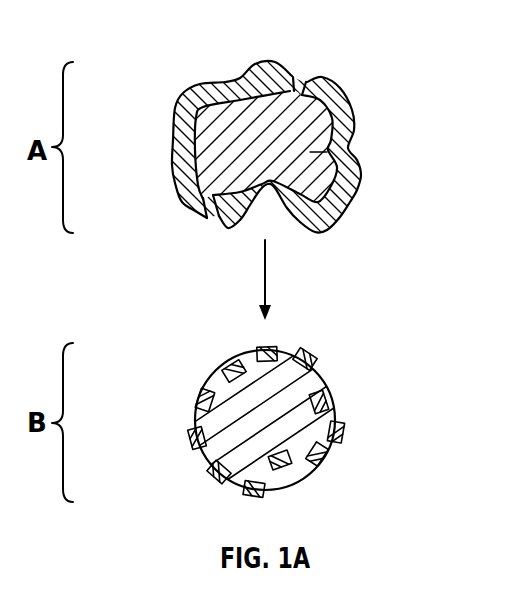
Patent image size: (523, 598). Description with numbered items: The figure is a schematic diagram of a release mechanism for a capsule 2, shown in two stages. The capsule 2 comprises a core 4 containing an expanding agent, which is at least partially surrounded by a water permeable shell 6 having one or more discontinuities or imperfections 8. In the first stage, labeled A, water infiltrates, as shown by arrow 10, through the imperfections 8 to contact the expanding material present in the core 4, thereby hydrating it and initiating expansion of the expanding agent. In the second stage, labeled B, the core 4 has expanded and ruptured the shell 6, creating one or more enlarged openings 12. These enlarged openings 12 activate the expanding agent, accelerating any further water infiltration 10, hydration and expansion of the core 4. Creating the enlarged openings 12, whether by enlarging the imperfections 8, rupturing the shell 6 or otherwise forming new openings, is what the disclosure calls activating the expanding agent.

The capsule 2 is at (122, 34).
The core 4 is at (362, 182).
The water permeable shell 6 is at (202, 84).
The imperfections 8 is at (204, 216).
The water infiltration 10 is at (301, 78).
The enlarged openings 12 is at (290, 342).